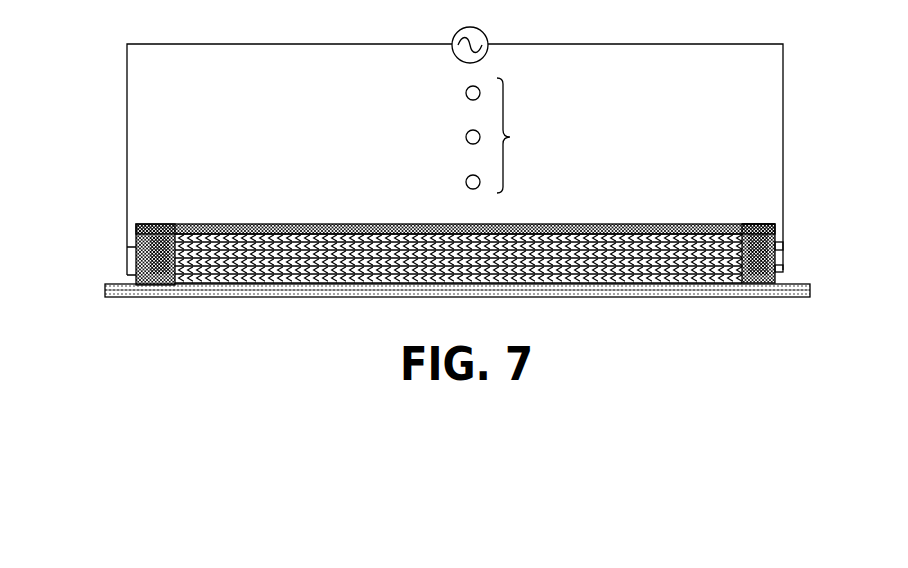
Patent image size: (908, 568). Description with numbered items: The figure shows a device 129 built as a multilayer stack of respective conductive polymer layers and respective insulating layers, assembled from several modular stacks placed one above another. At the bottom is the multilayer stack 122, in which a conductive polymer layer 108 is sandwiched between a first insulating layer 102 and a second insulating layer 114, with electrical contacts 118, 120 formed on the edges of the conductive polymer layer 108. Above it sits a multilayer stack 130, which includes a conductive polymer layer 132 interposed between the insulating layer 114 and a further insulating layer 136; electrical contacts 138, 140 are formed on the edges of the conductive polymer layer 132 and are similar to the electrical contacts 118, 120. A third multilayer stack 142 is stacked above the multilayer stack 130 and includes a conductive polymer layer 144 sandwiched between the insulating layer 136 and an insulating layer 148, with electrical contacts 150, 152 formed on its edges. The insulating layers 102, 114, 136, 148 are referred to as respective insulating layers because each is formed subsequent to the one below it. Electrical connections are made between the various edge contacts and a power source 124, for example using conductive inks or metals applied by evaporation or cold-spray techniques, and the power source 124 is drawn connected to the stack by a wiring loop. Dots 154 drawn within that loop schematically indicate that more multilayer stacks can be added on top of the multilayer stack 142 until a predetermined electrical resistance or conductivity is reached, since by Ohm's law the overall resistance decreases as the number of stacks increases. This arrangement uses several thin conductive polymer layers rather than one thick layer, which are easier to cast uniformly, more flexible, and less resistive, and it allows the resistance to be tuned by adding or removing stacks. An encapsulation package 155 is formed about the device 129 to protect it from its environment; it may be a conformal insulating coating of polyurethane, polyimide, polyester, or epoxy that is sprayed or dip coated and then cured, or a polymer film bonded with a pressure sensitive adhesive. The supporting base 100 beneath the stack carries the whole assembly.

The substrate 100 is at (778, 285).
The insulating layer 102 is at (737, 281).
The conductive polymer layer 108 is at (695, 285).
The insulating layer 114 is at (660, 275).
The electrical contact 118 is at (128, 264).
The electrical contact 120 is at (765, 265).
The multilayer stack 122 is at (777, 282).
The power source 124 is at (492, 21).
The device 129 is at (700, 140).
The multilayer stack 130 is at (784, 258).
The conductive polymer layer 132 is at (558, 265).
The insulating layer 136 is at (505, 254).
The electrical contact 138 is at (148, 226).
The electrical contact 140 is at (755, 255).
The multilayer stack 142 is at (772, 203).
The conductive polymer layer 144 is at (392, 244).
The insulating layer 148 is at (327, 238).
The electrical contact 150 is at (160, 247).
The electrical contact 152 is at (752, 242).
The dots 154 is at (516, 137).
The encapsulation package 155 is at (655, 224).